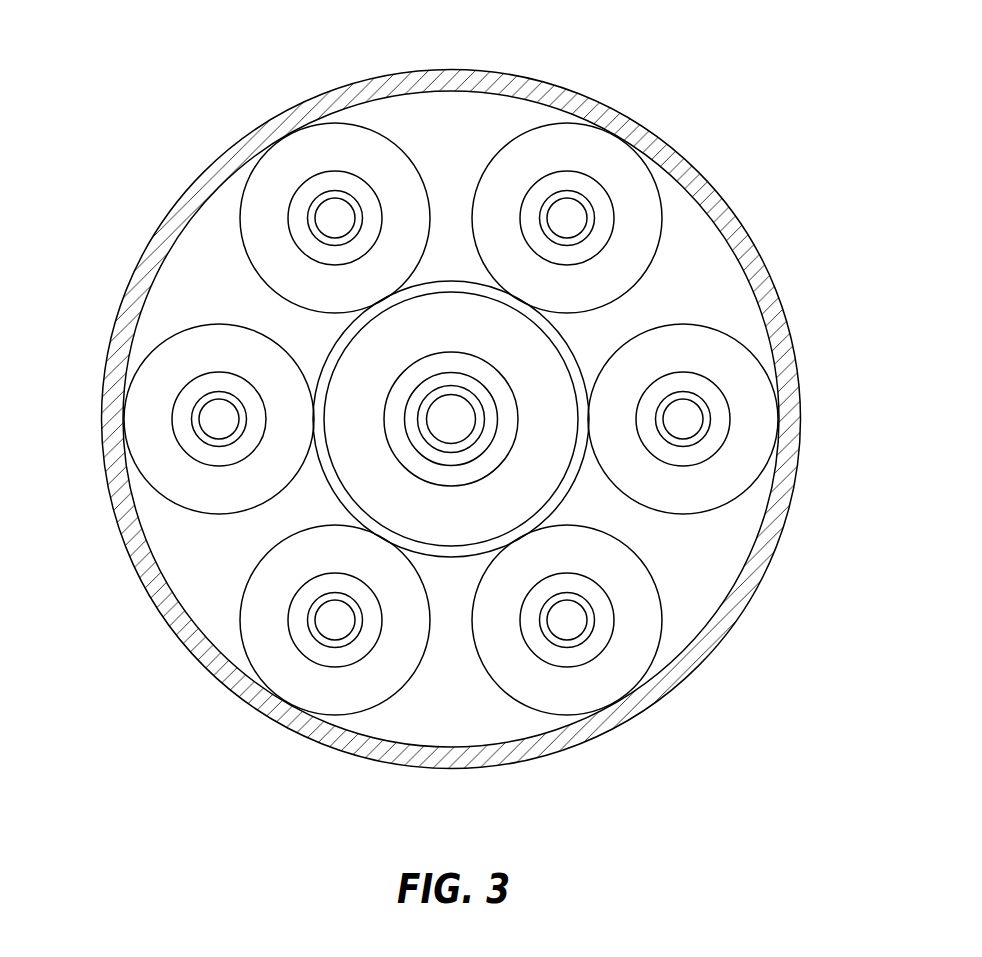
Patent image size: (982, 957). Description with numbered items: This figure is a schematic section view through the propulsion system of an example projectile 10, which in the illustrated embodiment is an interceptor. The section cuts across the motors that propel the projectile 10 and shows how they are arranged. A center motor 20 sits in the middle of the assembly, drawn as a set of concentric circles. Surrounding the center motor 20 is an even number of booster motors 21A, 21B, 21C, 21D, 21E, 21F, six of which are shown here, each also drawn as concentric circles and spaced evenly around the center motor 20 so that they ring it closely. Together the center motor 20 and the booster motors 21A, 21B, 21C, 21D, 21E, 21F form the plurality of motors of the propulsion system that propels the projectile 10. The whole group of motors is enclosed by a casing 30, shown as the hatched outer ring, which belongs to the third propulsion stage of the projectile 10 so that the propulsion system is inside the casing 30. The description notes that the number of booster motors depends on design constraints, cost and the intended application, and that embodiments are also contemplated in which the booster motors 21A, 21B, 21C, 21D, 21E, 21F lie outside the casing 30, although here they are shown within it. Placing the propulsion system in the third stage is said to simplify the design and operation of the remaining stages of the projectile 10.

The projectile 10 is at (623, 45).
The center motor 20 is at (543, 362).
The booster motor 21A is at (608, 153).
The booster motor 21B is at (760, 416).
The booster motor 21C is at (612, 685).
The booster motor 21D is at (292, 683).
The booster motor 21E is at (140, 413).
The booster motor 21F is at (293, 153).
The casing 30 is at (365, 80).